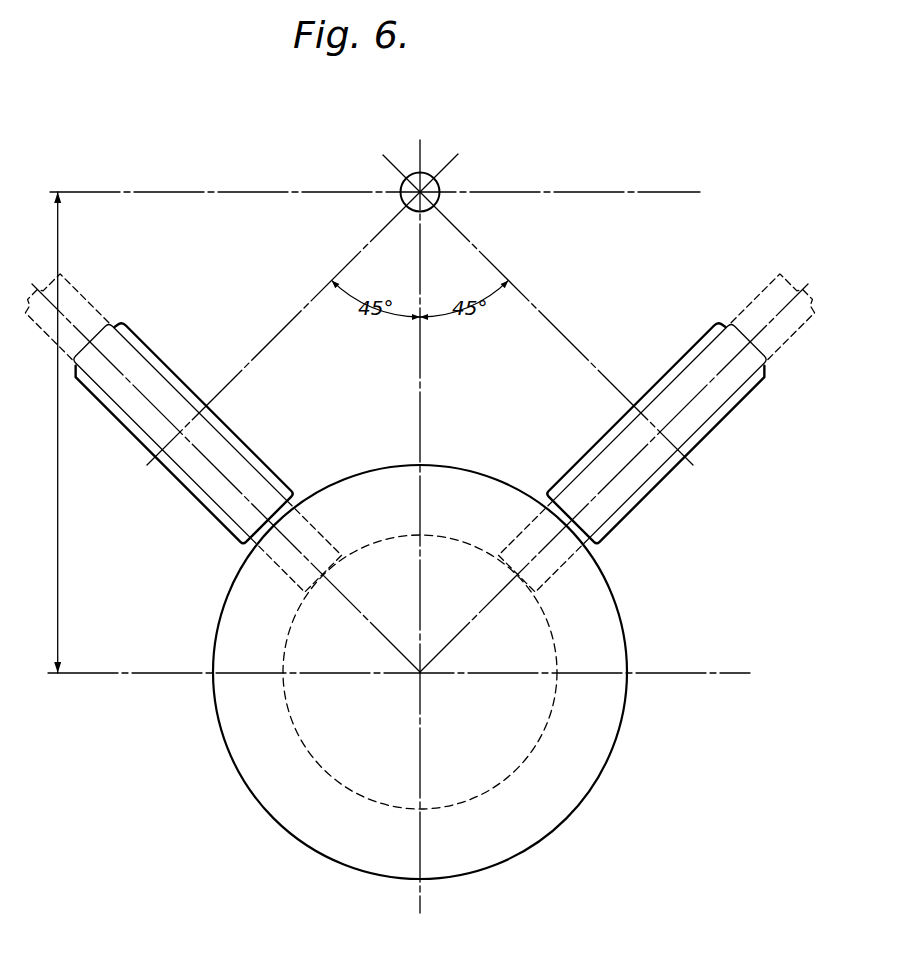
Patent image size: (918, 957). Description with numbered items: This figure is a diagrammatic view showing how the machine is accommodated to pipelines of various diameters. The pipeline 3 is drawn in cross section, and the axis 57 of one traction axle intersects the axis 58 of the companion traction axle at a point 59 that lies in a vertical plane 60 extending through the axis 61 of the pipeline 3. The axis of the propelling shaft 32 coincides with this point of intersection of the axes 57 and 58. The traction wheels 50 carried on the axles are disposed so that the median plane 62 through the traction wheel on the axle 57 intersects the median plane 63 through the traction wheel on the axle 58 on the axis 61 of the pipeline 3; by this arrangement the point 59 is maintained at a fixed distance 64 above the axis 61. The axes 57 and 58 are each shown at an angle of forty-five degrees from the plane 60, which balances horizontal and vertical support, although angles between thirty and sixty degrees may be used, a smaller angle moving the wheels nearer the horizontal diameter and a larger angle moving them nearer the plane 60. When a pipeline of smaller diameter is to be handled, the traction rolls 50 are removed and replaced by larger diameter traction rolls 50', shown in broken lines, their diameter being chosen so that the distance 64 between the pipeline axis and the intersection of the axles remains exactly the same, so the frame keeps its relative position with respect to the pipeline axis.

The pipeline 3 is at (560, 827).
The propelling shaft 32 is at (440, 198).
The traction wheels 50 is at (420, 412).
The larger diameter traction rolls 50' is at (420, 445).
The axis of traction axle 57 is at (570, 342).
The axis of companion traction axle 58 is at (272, 348).
The point of intersection 59 is at (440, 180).
The vertical plane 60 is at (420, 397).
The axis of the pipeline 61 is at (418, 676).
The median plane 62 is at (487, 605).
The median plane 63 is at (352, 602).
The fixed distance 64 is at (58, 468).